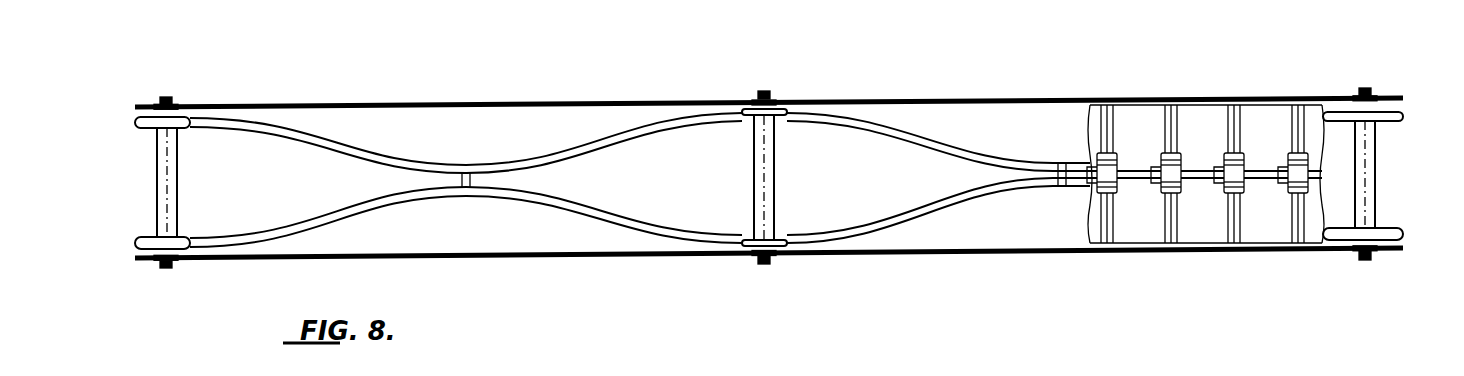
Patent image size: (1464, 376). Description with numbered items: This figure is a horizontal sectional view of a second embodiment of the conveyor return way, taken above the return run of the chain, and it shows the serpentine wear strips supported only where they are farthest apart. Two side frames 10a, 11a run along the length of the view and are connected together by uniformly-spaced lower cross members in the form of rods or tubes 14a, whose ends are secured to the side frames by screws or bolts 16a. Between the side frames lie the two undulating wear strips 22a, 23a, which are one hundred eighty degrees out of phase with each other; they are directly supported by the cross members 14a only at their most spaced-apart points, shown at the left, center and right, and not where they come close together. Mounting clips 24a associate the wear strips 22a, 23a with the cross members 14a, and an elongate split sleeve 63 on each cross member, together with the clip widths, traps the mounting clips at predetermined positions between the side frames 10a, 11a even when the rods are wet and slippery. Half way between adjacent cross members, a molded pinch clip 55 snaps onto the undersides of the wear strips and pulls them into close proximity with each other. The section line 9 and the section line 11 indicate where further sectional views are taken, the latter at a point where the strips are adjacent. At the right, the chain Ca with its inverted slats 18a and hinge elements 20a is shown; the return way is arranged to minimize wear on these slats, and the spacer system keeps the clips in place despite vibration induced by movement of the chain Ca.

The side frame 10a is at (584, 258).
The side frame 11a is at (550, 104).
The lower cross member 14a is at (192, 105).
The screw 16a is at (164, 97).
The split sleeve 63 is at (157, 185).
The mounting clip 24a is at (150, 128).
The wear strip 22a is at (926, 206).
The wear strip 23a is at (918, 136).
The pinch clip 55 is at (472, 163).
The chain Ca is at (1270, 110).
The inverted slat 18a is at (1216, 246).
The coupling 20a is at (1180, 160).
The section line 9- 9 is at (763, 40).
The section line 11- 11 is at (466, 120).